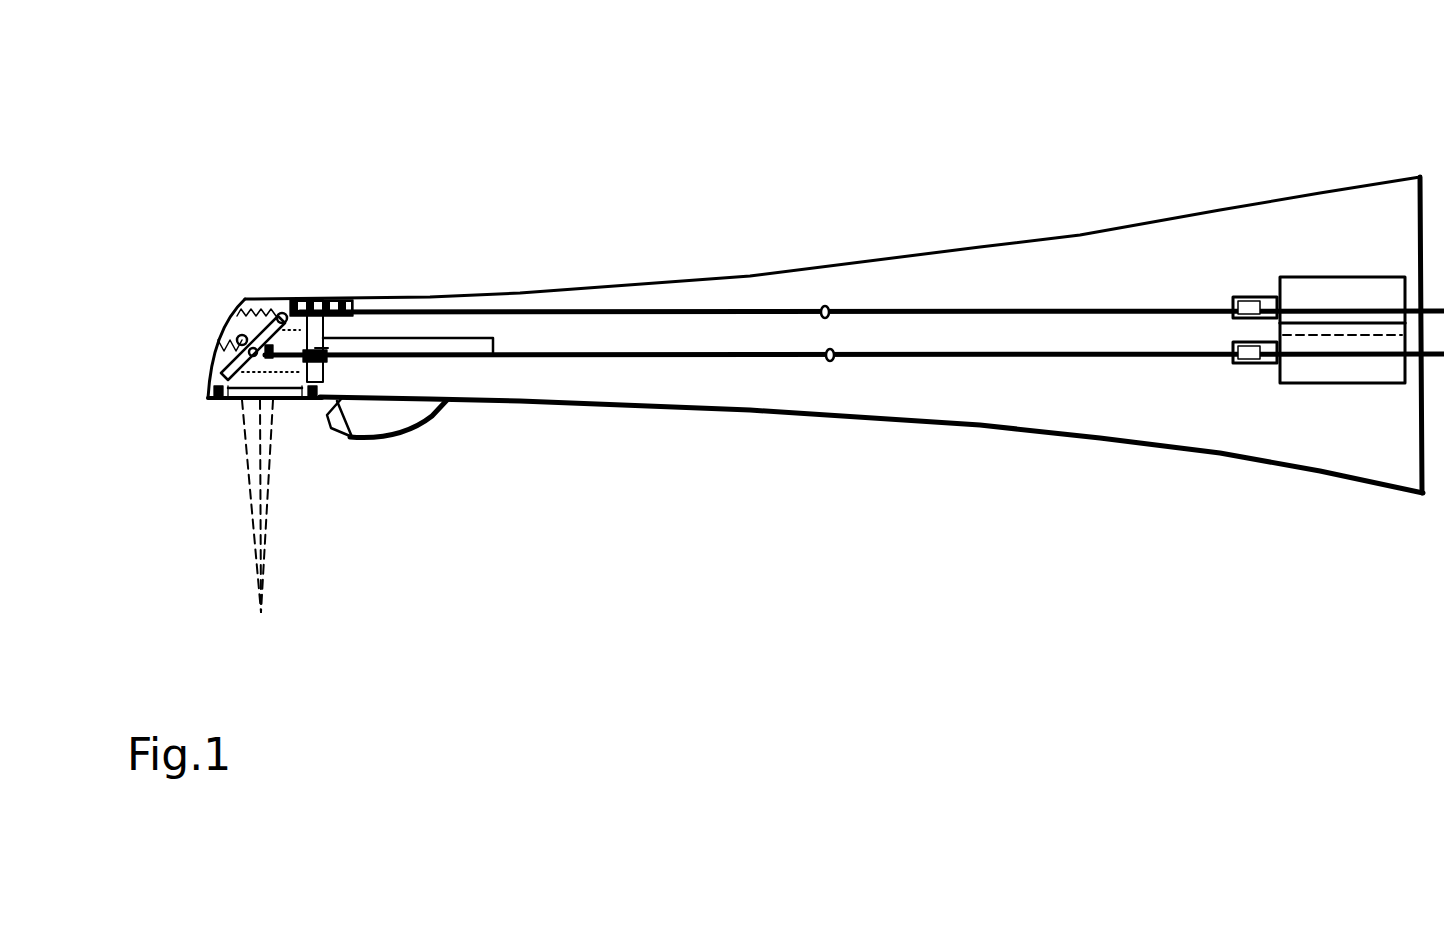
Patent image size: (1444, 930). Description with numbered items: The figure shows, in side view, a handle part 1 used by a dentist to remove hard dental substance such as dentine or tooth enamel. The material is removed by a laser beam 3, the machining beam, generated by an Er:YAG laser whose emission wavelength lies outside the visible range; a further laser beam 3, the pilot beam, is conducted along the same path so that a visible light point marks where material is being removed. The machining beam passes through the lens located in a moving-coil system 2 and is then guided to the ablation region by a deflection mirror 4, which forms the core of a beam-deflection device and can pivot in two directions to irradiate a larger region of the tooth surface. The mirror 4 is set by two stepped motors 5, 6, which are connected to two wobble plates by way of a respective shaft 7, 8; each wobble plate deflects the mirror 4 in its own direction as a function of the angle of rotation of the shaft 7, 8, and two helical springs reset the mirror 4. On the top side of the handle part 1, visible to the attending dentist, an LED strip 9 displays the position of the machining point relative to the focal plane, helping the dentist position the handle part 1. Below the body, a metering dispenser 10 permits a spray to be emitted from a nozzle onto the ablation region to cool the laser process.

The handle part 1 is at (730, 165).
The moving-coil system 2 is at (320, 348).
The laser beam 3 is at (260, 592).
The deflection mirror 4 is at (218, 362).
The stepped motor 5 is at (1342, 298).
The stepped motor 6 is at (1335, 367).
The shaft 7 is at (1017, 308).
The shaft 8 is at (1042, 357).
The LED strip 9 is at (333, 303).
The metering dispenser 10 is at (375, 415).